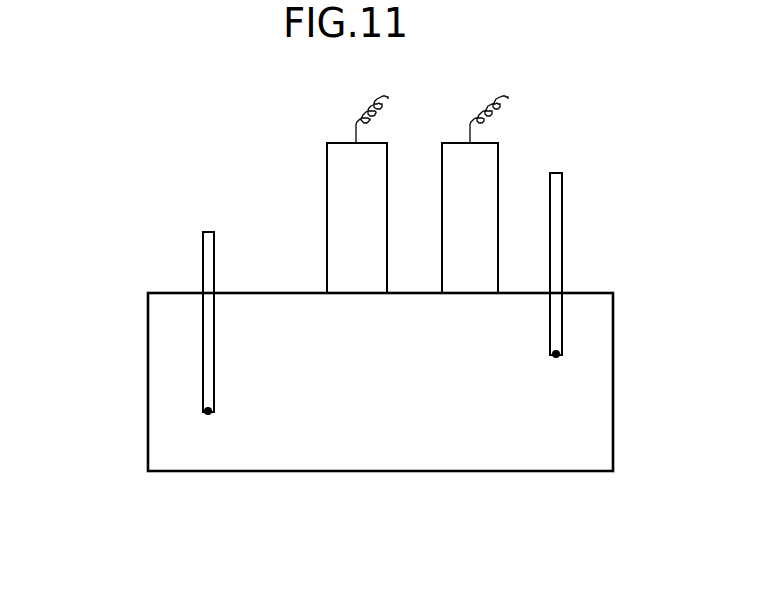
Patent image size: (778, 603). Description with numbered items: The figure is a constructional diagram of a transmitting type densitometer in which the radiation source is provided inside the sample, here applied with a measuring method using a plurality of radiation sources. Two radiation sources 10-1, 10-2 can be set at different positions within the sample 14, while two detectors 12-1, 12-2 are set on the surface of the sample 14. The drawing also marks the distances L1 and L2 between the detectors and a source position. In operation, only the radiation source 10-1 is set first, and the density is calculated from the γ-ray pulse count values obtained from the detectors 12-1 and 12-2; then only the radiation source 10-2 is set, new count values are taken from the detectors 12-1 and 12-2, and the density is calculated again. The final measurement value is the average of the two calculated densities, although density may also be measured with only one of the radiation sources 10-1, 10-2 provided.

The sample 14 is at (590, 292).
The detector 12-1 is at (455, 141).
The detector 12-2 is at (333, 142).
The radiation source 10-1 is at (558, 356).
The radiation source 10-2 is at (202, 410).
The distance L1 is at (548, 350).
The distance L2 is at (548, 355).